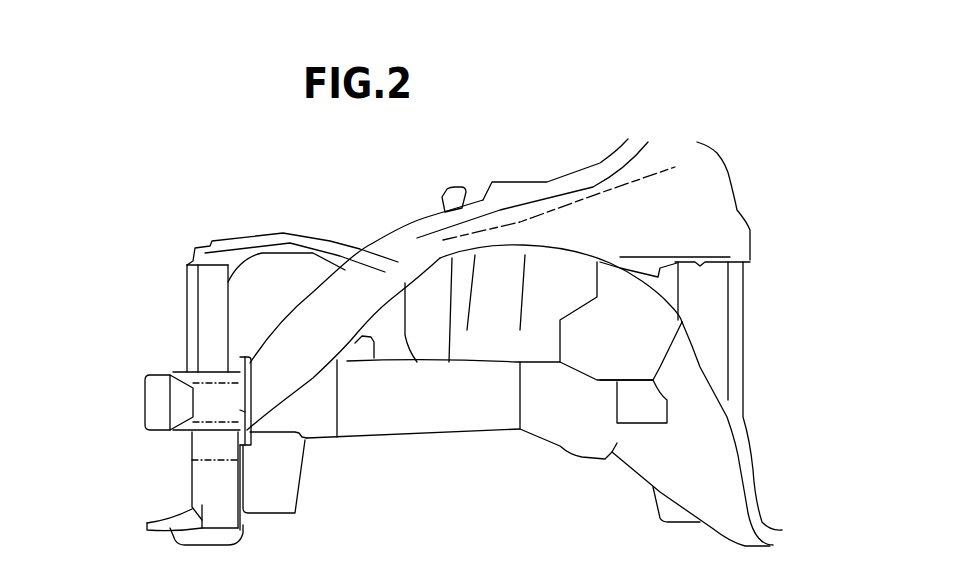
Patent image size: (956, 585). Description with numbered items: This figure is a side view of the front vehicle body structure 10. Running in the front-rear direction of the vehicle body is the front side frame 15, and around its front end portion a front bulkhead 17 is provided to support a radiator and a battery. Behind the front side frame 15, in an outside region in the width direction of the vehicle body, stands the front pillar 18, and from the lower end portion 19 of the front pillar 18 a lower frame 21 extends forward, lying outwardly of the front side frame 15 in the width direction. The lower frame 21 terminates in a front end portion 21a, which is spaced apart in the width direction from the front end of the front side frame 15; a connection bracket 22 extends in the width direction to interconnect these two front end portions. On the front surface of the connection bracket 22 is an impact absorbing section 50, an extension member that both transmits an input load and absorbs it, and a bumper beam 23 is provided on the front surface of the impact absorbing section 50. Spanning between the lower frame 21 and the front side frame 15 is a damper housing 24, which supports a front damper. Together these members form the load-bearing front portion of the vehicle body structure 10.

The front vehicle body structure 10 is at (155, 83).
The front side frame 15 is at (437, 438).
The front bulkhead 17 is at (183, 308).
The front pillar 18 is at (753, 272).
The lower end portion 19 is at (743, 312).
The lower frame 21 is at (313, 288).
The front end portion 21a is at (268, 402).
The connection bracket 22 is at (250, 450).
The bumper beam 23 is at (142, 400).
The damper housing 24 is at (518, 180).
The impact absorbing section 50 is at (202, 433).